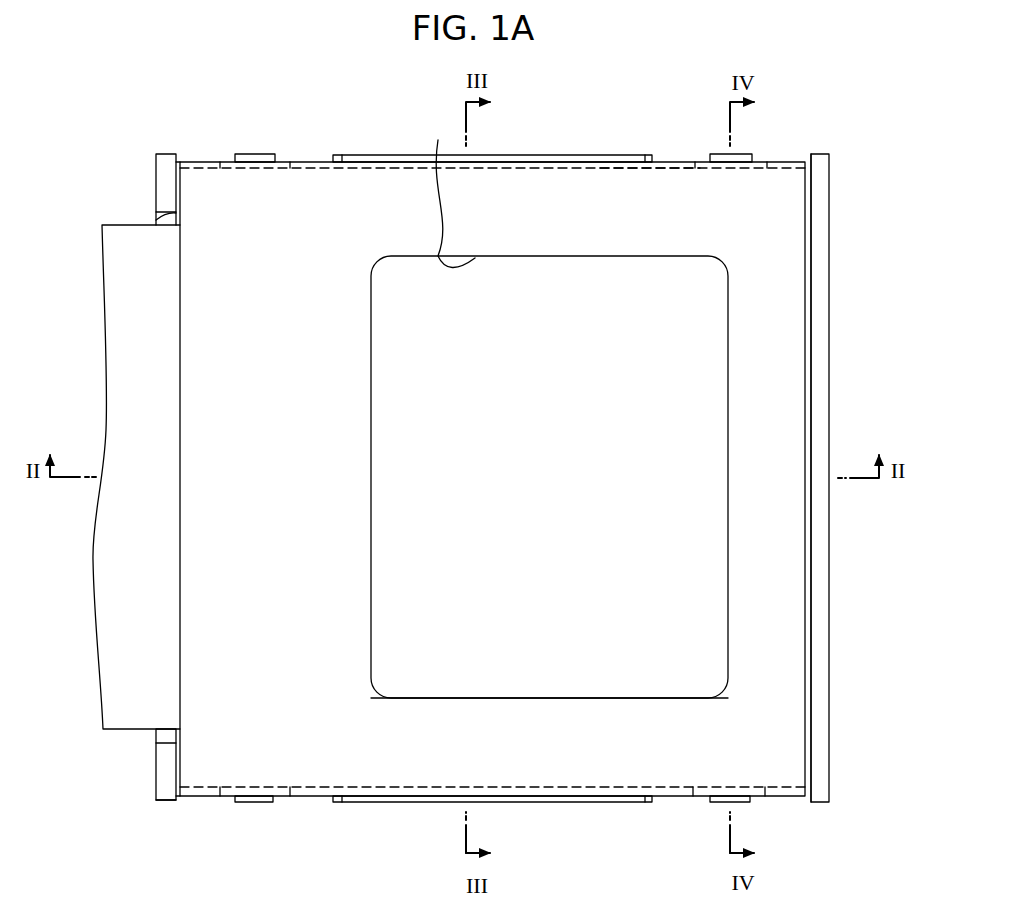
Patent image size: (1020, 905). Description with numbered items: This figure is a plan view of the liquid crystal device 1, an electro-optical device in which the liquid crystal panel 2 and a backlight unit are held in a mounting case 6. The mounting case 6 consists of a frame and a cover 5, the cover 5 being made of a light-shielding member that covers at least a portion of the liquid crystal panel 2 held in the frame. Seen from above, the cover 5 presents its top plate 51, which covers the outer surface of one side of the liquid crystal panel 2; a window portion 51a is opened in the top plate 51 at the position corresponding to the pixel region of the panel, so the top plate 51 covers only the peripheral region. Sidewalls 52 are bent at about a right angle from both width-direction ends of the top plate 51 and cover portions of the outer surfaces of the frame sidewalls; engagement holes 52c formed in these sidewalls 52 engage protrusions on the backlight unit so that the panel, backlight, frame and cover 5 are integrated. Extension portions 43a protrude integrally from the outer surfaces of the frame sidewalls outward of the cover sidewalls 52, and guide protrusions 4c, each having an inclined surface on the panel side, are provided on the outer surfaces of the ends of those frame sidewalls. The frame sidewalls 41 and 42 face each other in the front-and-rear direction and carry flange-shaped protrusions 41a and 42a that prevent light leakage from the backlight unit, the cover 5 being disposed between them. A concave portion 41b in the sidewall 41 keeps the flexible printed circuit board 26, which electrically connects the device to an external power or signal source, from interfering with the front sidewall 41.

The liquid crystal device 1 is at (213, 155).
The liquid crystal panel 2 is at (698, 615).
The guide protrusions 4c is at (250, 158).
The cover 5 is at (620, 210).
The mounting case 6 is at (204, 800).
The flexible printed circuit board 26 is at (118, 620).
The sidewall 41 is at (165, 160).
The flange-shaped protrusion 41a is at (165, 800).
The concave portion 41b is at (165, 218).
The sidewall 42 is at (822, 268).
The flange-shaped protrusion 42a is at (820, 165).
The extension portions 43a is at (540, 160).
The top plate 51 is at (563, 742).
The window portion 51a is at (442, 190).
The sidewalls 52 is at (372, 162).
The engagement holes 52c is at (290, 165).